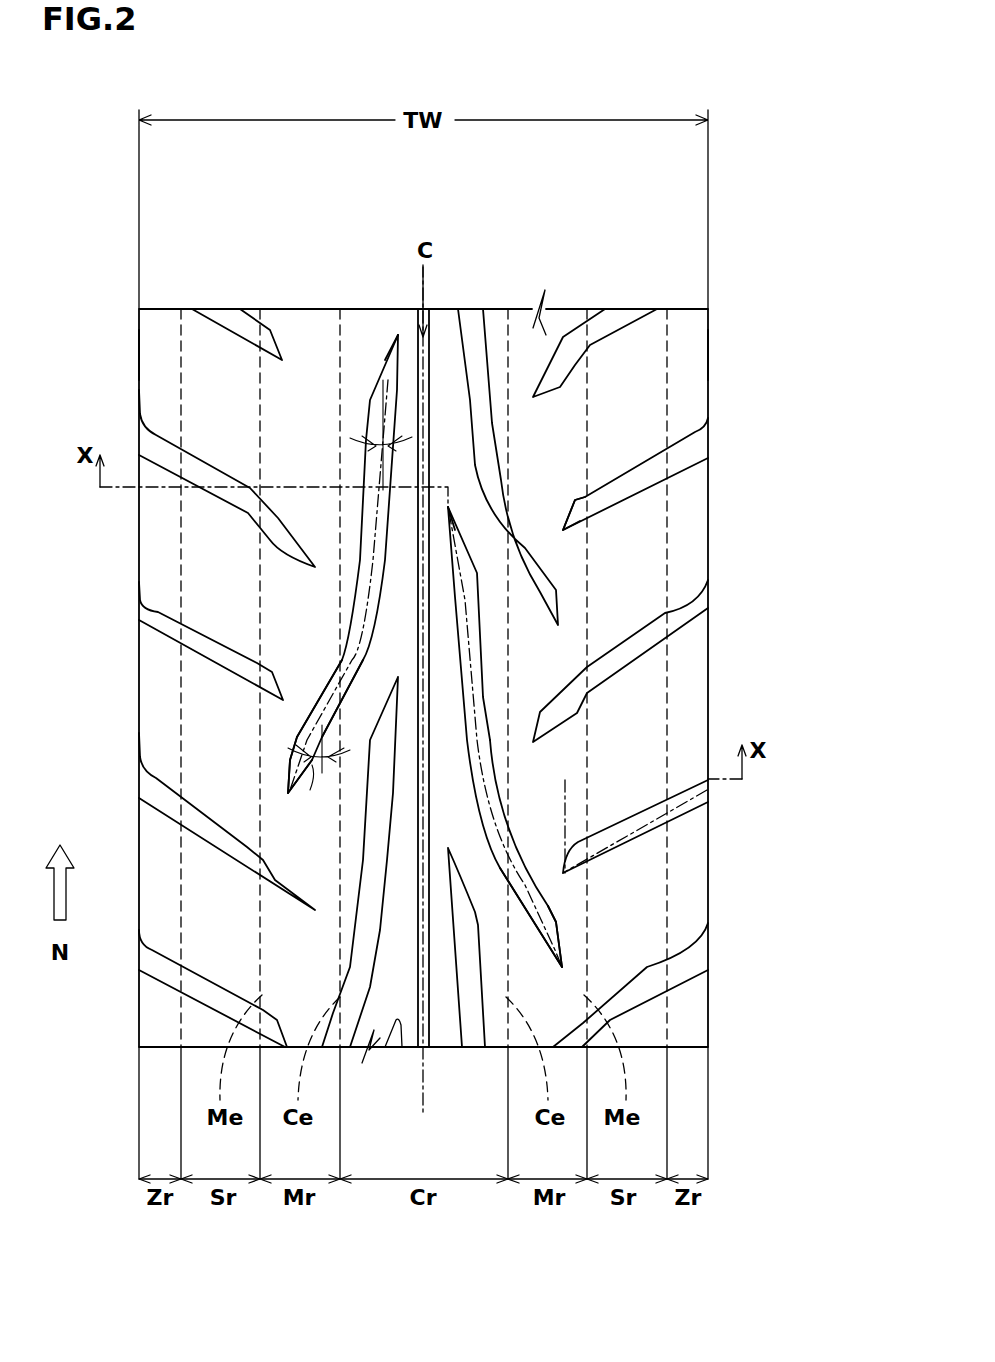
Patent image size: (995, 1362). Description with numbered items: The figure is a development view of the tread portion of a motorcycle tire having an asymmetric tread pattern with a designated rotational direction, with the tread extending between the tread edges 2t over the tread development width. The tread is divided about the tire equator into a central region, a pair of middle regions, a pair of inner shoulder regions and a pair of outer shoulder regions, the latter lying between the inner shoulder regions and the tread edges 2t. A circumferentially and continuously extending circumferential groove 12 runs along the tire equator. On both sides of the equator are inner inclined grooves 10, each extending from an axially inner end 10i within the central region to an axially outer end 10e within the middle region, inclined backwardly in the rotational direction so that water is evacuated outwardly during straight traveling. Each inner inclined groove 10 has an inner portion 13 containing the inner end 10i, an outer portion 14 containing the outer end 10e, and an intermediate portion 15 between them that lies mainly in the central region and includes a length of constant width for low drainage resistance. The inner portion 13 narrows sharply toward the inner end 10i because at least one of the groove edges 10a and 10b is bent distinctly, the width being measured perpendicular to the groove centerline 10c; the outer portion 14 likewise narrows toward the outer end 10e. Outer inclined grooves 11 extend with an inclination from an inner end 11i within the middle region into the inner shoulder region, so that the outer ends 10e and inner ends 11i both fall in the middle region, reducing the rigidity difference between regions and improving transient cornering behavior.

The tread edge 2t is at (708, 351).
The inner inclined groove 10 is at (434, 607).
The groove edge 10a is at (393, 430).
The groove edge 10b is at (370, 433).
The groove centerline 10c is at (337, 695).
The outer end 10e is at (563, 972).
The inner end 10i is at (450, 500).
The outer inclined groove 11 is at (691, 613).
The inner end 11i is at (563, 530).
The circumferential groove 12 is at (428, 310).
The inner portion 13 is at (480, 570).
The outer portion 14 is at (560, 924).
The intermediate portion 15 is at (496, 762).